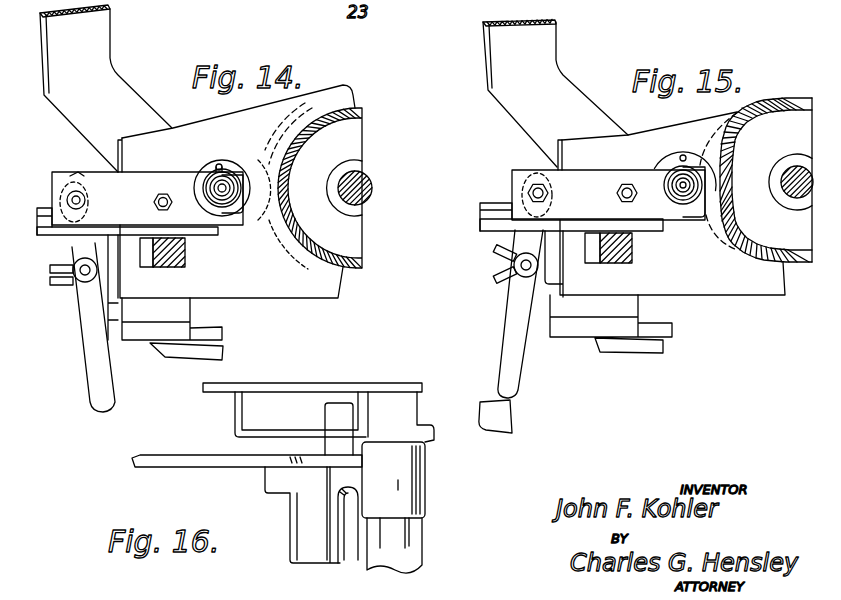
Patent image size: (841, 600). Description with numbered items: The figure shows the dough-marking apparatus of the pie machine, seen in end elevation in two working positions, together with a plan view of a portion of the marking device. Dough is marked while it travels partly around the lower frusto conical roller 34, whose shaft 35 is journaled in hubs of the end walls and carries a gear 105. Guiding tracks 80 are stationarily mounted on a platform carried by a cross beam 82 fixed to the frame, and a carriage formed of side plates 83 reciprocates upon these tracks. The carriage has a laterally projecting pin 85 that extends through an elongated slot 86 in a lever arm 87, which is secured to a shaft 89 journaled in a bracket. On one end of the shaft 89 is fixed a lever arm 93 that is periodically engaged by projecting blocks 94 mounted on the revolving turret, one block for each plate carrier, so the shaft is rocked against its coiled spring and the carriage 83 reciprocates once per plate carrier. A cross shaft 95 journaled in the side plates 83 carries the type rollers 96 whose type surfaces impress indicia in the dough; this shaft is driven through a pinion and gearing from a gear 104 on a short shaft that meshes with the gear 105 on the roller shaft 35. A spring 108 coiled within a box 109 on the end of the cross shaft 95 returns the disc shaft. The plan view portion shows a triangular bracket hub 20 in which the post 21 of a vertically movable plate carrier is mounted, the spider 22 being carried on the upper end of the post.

In FIG. 16, the hub 20 is at (422, 494).
In FIG. 16, the post 21 is at (418, 540).
In FIG. 16, the spider 22 is at (234, 413).
In FIG. 14, the lower frusto conical roller 34 is at (358, 112).
In FIG. 15, the lower frusto conical roller 34 is at (728, 190).
In FIG. 14, the shaft 35 is at (372, 188).
In FIG. 15, the shaft 35 is at (790, 168).
In FIG. 14, the guiding tracks 80 is at (48, 232).
In FIG. 15, the guiding tracks 80 is at (480, 224).
In FIG. 14, the cross beam 82 is at (226, 335).
In FIG. 14, the side plates 83 is at (147, 198).
In FIG. 15, the side plates 83 is at (608, 195).
In FIG. 14, the laterally projecting pin 85 is at (67, 198).
In FIG. 15, the laterally projecting pin 85 is at (530, 182).
In FIG. 14, the elongated slot 86 is at (77, 178).
In FIG. 14, the lever arm 87 is at (73, 248).
In FIG. 15, the lever arm 87 is at (530, 242).
In FIG. 15, the shaft 89 is at (512, 275).
In FIG. 14, the lever arm 93 is at (100, 380).
In FIG. 15, the lever arm 93 is at (520, 322).
In FIG. 15, the projecting blocks 94 is at (508, 418).
In FIG. 14, the cross shaft 95 is at (222, 164).
In FIG. 15, the cross shaft 95 is at (683, 192).
In FIG. 14, the type rollers 96 is at (258, 157).
In FIG. 15, the type rollers 96 is at (702, 162).
In FIG. 14, the gear 104 is at (330, 187).
In FIG. 14, the gear 105 is at (274, 246).
In FIG. 14, the spring 108 is at (227, 205).
In FIG. 15, the spring 108 is at (672, 175).
In FIG. 14, the box 109 is at (216, 172).